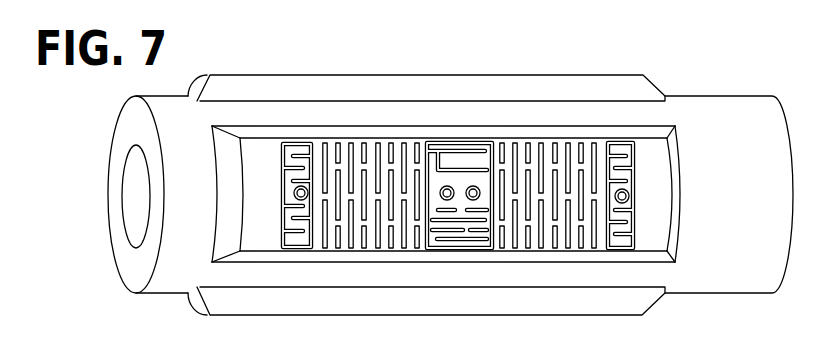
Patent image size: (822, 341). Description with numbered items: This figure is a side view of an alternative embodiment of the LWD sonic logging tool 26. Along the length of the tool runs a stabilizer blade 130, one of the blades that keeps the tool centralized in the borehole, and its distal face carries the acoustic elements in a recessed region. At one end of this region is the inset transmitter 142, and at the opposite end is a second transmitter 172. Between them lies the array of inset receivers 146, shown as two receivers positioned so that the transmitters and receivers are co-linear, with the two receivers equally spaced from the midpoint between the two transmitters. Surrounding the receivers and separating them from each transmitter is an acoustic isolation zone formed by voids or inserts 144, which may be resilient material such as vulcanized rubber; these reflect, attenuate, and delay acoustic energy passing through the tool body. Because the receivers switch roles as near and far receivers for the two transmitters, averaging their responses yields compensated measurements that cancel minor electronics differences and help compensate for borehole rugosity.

The sonic logging tool 26 is at (154, 294).
The stabilizer blade 130 is at (682, 192).
The transmitter 142 is at (618, 189).
The inserts 144 is at (537, 147).
The receivers 146 is at (471, 186).
The second transmitter 172 is at (303, 186).